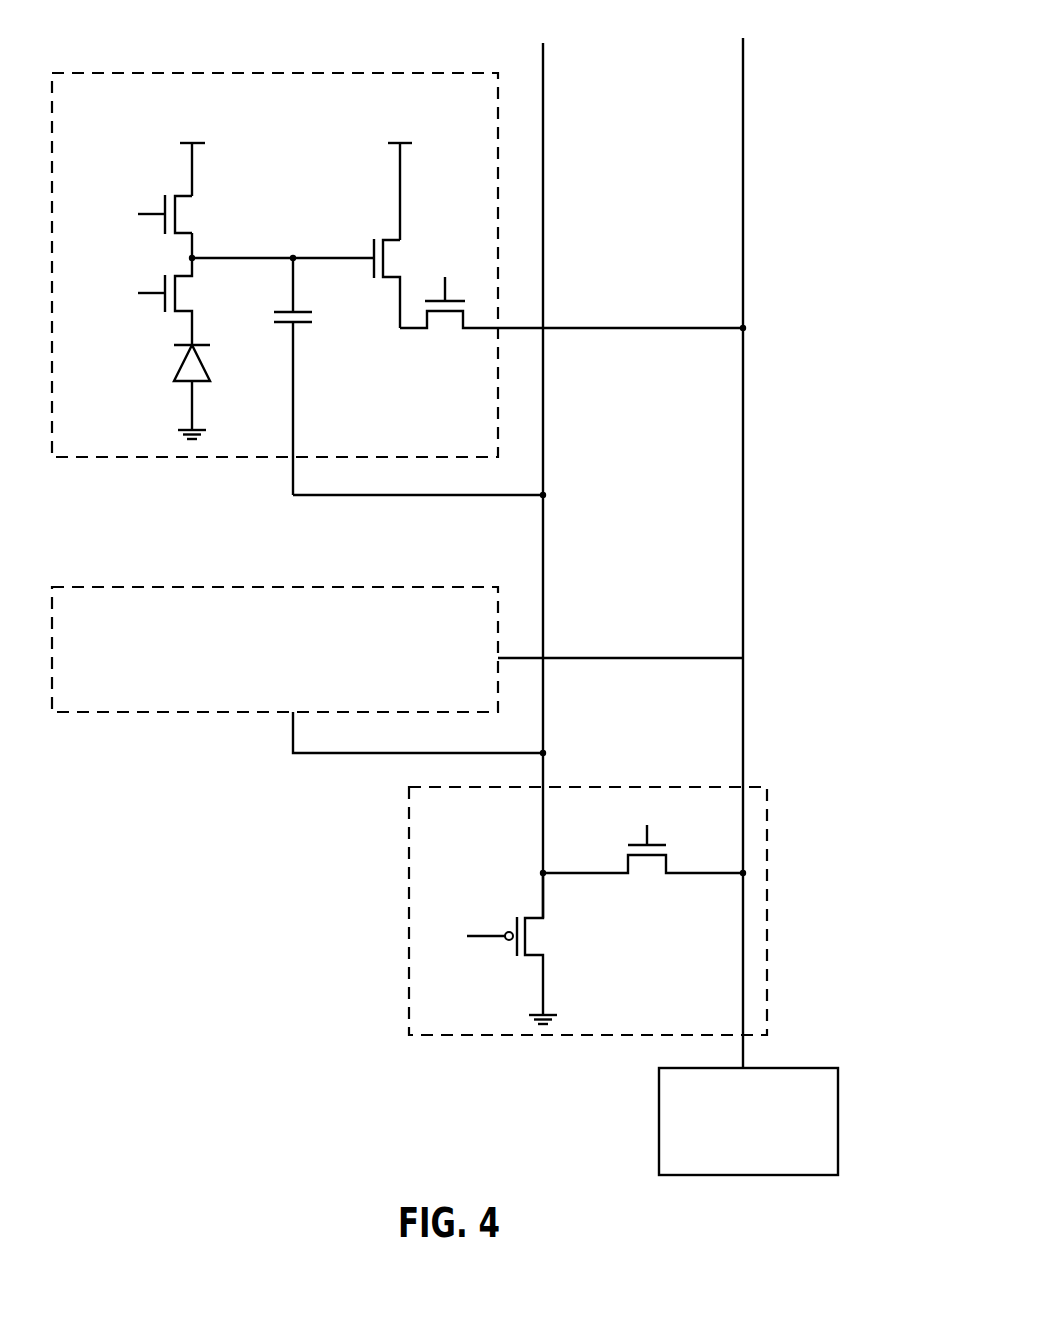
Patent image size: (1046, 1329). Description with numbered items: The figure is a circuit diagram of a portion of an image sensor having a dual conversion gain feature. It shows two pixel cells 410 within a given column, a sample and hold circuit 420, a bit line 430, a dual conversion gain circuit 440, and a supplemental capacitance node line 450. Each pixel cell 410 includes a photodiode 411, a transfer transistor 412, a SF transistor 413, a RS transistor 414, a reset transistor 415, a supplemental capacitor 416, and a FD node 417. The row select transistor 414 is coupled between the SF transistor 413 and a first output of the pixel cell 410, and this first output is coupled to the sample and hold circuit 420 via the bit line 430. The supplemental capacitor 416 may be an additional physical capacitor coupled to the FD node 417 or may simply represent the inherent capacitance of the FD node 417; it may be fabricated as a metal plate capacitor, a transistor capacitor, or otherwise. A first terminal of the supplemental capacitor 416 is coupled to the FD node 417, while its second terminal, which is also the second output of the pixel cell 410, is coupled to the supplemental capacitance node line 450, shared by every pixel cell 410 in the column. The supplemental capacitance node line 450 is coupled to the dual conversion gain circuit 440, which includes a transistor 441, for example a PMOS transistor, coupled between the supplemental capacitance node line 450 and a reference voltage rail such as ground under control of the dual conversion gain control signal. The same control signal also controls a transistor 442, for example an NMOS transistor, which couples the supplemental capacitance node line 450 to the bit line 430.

The pixel cell 410 is at (498, 73).
The photodiode 411 is at (176, 392).
The transfer transistor 412 is at (152, 301).
The SF transistor 413 is at (382, 221).
The RS transistor 414 is at (573, 293).
The reset transistor 415 is at (153, 189).
The supplemental capacitor 416 is at (312, 376).
The FD node 417 is at (257, 247).
The sample and hold circuit 420 is at (805, 1068).
The bit line 430 is at (743, 513).
The dual conversion gain circuit 440 is at (767, 787).
The transistor 441 is at (492, 948).
The transistor 442 is at (643, 844).
The supplemental capacitance node line 450 is at (543, 495).